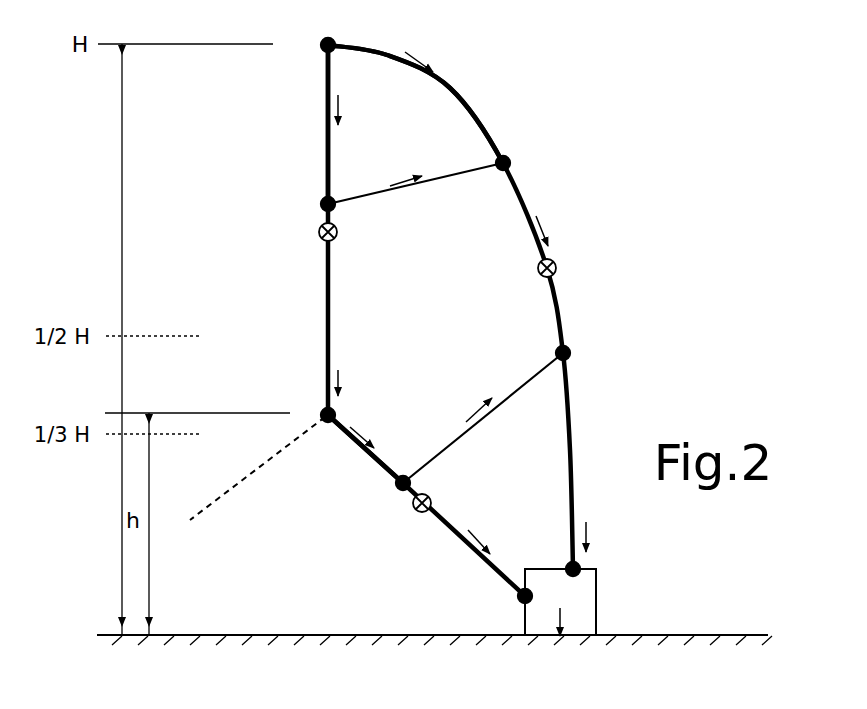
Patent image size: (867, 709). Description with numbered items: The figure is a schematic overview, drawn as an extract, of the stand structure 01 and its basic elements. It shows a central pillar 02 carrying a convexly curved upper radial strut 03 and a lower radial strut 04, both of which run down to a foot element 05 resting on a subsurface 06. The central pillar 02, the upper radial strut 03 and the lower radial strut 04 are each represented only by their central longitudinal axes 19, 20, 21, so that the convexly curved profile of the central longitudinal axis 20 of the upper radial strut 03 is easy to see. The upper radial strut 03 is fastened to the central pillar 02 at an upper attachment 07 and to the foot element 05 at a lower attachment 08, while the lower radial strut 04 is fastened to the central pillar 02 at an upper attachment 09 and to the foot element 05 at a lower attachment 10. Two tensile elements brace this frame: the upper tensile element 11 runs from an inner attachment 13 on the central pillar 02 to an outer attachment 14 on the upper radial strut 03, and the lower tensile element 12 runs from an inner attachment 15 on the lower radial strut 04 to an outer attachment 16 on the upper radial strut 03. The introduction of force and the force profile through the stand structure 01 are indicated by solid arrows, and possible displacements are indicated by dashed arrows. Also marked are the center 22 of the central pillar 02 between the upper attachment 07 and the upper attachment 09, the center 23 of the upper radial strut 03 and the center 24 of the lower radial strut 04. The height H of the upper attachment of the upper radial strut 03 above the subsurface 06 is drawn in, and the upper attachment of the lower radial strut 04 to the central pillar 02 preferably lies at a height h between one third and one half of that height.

The stand structure 01 is at (557, 130).
The central pillar 02 is at (322, 172).
The upper radial strut 03 is at (452, 90).
The lower radial strut 04 is at (346, 444).
The foot element 05 is at (574, 606).
The subsurface 06 is at (273, 641).
The upper attachment 07 is at (320, 45).
The lower attachment 08 is at (581, 567).
The upper attachment 09 is at (320, 414).
The lower attachment 10 is at (518, 598).
The upper tensile element 11 is at (466, 170).
The lower tensile element 12 is at (540, 372).
The inner attachment 13 is at (320, 205).
The outer attachment 14 is at (510, 158).
The inner attachment 15 is at (395, 483).
The outer attachment 16 is at (571, 352).
The central longitudinal axis 19 is at (324, 152).
The central longitudinal axis 20 is at (486, 131).
The central longitudinal axis 21 is at (380, 457).
The center 22 is at (318, 234).
The center 23 is at (557, 267).
The center 24 is at (414, 507).